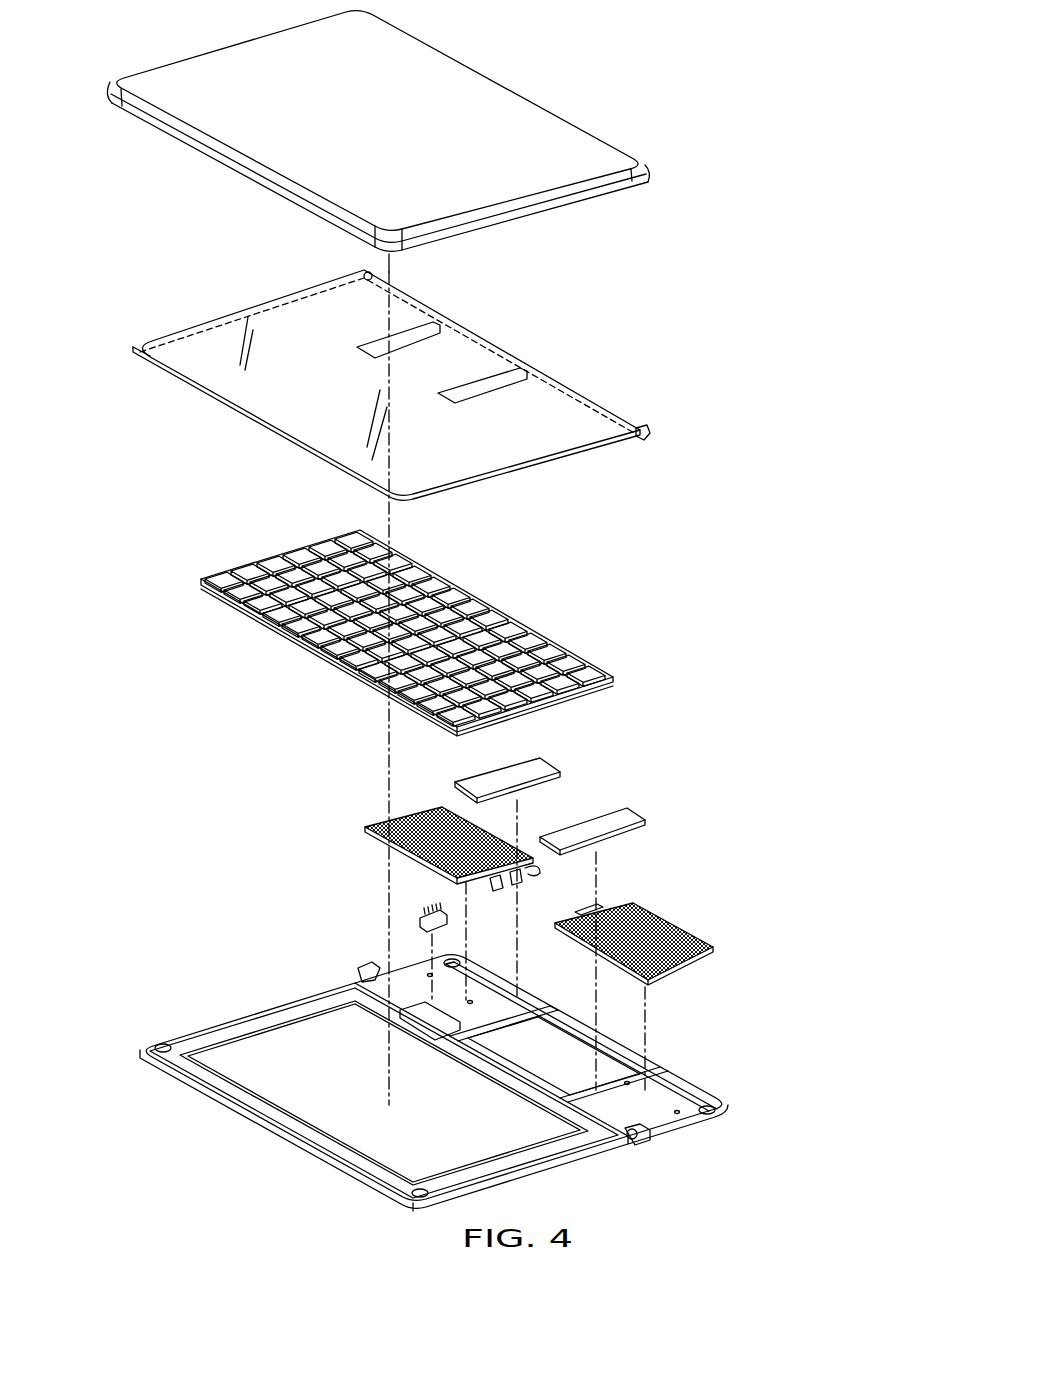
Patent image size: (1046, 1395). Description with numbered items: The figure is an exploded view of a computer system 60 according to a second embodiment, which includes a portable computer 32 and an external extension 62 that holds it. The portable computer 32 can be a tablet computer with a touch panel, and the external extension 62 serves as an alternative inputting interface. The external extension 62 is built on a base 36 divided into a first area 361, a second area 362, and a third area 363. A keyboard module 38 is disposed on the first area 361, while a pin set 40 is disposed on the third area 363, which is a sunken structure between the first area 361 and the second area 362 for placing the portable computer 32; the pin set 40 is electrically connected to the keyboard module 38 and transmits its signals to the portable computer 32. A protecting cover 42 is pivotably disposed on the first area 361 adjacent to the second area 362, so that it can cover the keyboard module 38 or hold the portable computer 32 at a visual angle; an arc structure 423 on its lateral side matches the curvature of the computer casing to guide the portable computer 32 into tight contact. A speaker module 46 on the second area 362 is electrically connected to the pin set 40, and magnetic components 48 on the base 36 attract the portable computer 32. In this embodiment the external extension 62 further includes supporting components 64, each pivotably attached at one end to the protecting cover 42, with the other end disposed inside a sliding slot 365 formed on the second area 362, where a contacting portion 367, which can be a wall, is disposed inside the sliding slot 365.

The computer system 60 is at (784, 87).
The external extension 62 is at (778, 245).
The portable computer 32 is at (530, 100).
The protecting cover 42 is at (580, 403).
The arc structure 423 is at (133, 349).
The keyboard module 38 is at (513, 617).
The supporting component 64 is at (548, 770).
The speaker module 46 is at (673, 925).
The pin set 40 is at (422, 915).
The magnetic component 48 is at (163, 1044).
The base 36 is at (455, 1067).
The first area 361 is at (537, 1150).
The second area 362 is at (660, 1113).
The third area 363 is at (637, 1137).
The sliding slot 365 is at (530, 1002).
The contacting portion 367 is at (557, 1006).